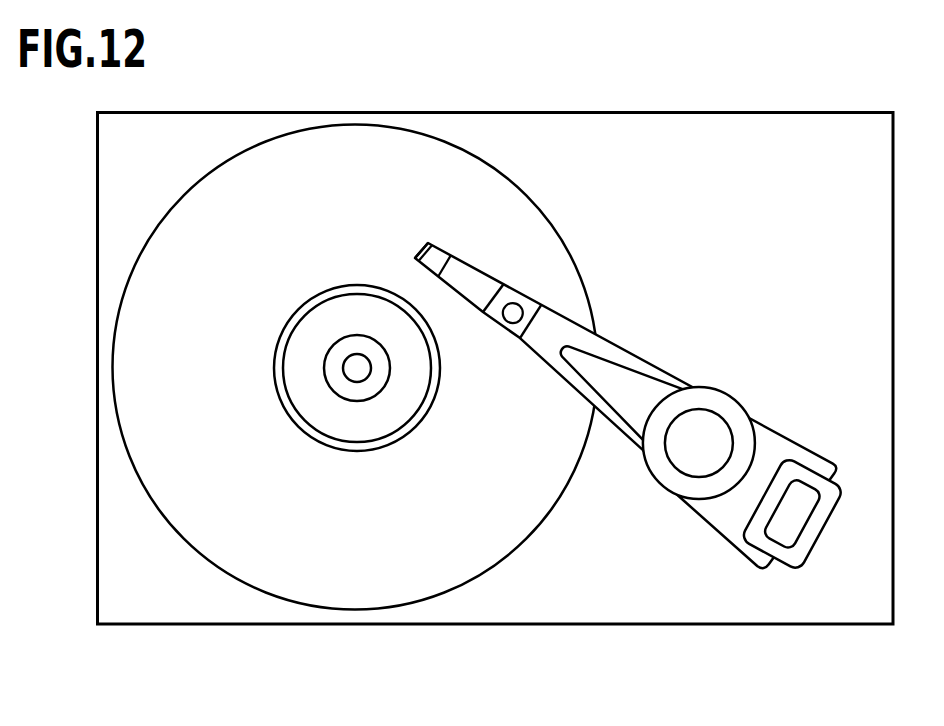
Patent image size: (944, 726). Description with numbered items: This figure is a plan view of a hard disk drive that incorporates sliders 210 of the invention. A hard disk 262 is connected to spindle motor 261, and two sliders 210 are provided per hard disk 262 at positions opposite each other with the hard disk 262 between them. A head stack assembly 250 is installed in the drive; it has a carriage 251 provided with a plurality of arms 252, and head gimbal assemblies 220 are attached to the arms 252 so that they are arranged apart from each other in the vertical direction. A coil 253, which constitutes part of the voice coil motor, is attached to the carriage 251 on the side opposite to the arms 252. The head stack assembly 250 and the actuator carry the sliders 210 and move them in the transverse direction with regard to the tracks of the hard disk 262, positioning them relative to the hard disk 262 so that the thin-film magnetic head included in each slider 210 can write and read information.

The slider 210 is at (436, 247).
The head gimbal assembly 220 is at (483, 313).
The head stack assembly 250 is at (630, 371).
The carriage 251 is at (705, 388).
The arm 252 is at (622, 440).
The coil 253 is at (827, 540).
The spindle motor 261 is at (358, 375).
The hard disk 262 is at (268, 593).